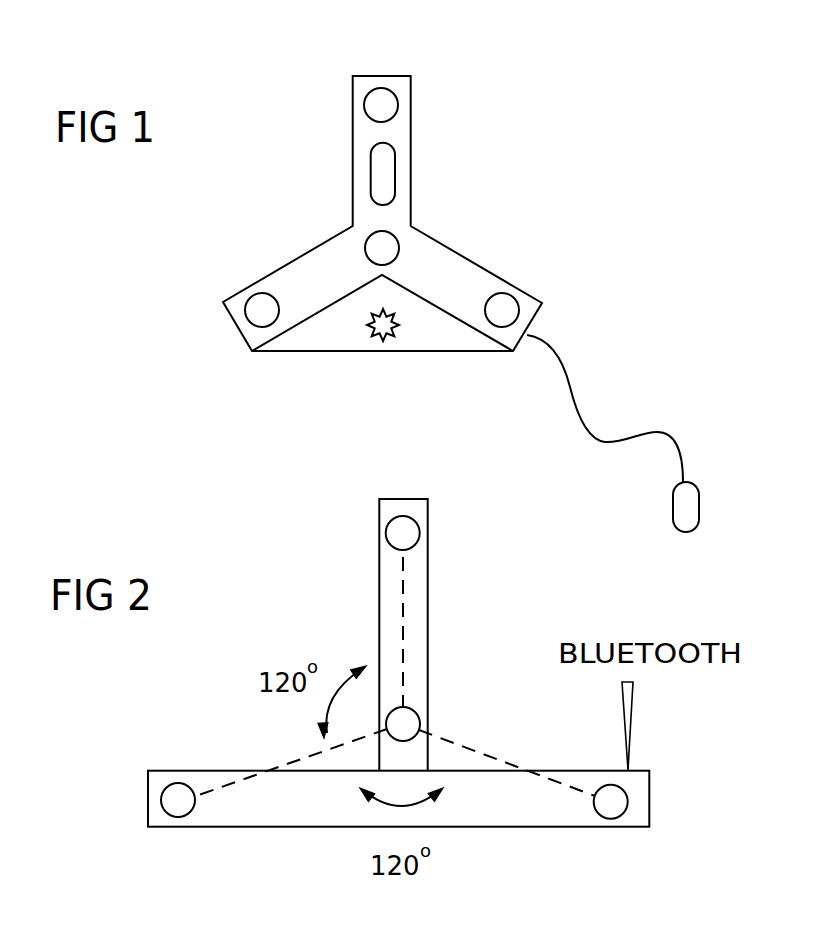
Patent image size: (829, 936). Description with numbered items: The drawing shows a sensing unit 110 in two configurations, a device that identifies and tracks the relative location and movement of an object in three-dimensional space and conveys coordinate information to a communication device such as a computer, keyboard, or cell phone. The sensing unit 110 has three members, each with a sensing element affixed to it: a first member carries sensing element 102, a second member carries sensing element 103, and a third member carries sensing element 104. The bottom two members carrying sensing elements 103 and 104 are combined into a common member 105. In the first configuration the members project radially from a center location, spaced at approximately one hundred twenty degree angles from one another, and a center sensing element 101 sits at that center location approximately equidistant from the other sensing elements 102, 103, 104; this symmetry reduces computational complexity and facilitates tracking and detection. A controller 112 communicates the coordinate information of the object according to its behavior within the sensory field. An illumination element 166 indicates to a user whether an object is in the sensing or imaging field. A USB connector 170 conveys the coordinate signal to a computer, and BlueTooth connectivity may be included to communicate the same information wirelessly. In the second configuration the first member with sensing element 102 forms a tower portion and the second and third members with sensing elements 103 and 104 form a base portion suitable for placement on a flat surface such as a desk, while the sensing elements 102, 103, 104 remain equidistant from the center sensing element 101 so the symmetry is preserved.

In FIG. 1, the sensing unit 110 is at (690, 20).
In FIG. 1, the center sensing element 101 is at (400, 240).
In FIG. 2, the center sensing element 101 is at (423, 712).
In FIG. 1, the first member sensing element 102 is at (390, 89).
In FIG. 2, the first member sensing element 102 is at (420, 532).
In FIG. 1, the second member sensing element 103 is at (525, 295).
In FIG. 2, the second member sensing element 103 is at (625, 803).
In FIG. 1, the third member sensing element 104 is at (247, 315).
In FIG. 2, the third member sensing element 104 is at (160, 800).
In FIG. 1, the common member 105 is at (310, 352).
In FIG. 1, the controller 112 is at (395, 178).
In FIG. 1, the illumination element 166 is at (383, 341).
In FIG. 1, the USB connector 170 is at (673, 505).